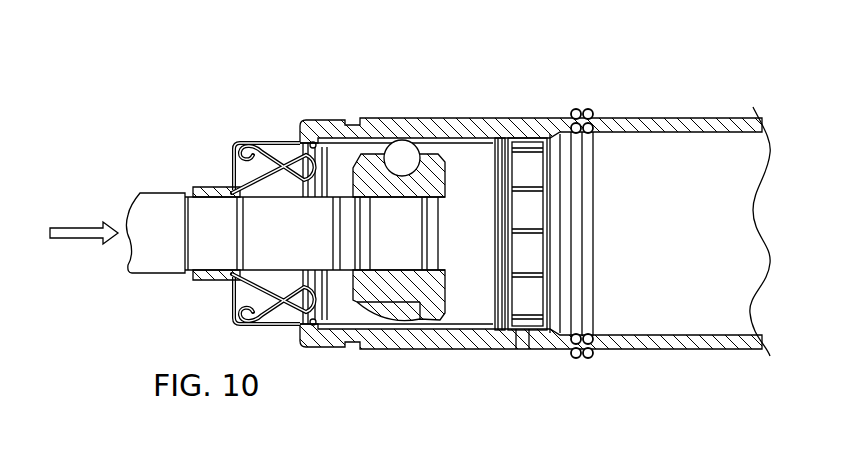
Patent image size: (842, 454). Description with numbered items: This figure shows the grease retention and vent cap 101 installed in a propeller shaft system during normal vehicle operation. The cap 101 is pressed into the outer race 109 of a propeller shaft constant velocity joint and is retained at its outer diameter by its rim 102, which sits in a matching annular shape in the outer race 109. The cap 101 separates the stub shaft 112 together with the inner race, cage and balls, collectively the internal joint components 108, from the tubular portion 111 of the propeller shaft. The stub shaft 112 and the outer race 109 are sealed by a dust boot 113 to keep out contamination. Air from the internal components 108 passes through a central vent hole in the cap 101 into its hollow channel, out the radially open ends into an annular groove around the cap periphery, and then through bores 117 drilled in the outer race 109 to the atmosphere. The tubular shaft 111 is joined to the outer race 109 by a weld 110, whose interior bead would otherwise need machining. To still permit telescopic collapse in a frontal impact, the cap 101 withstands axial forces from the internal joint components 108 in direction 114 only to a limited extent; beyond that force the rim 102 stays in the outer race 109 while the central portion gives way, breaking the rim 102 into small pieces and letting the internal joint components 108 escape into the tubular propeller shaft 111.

The grease retention and vent cap 101 is at (535, 145).
The rim 102 is at (500, 140).
The internal joint components 108 is at (411, 149).
The outer race 109 is at (396, 121).
The weld 110 is at (583, 112).
The tubular portion of the propeller shaft 111 is at (640, 121).
The stub shaft 112 is at (163, 198).
The dust boot 113 is at (232, 183).
The direction 114 is at (77, 236).
The bores 117 is at (518, 350).